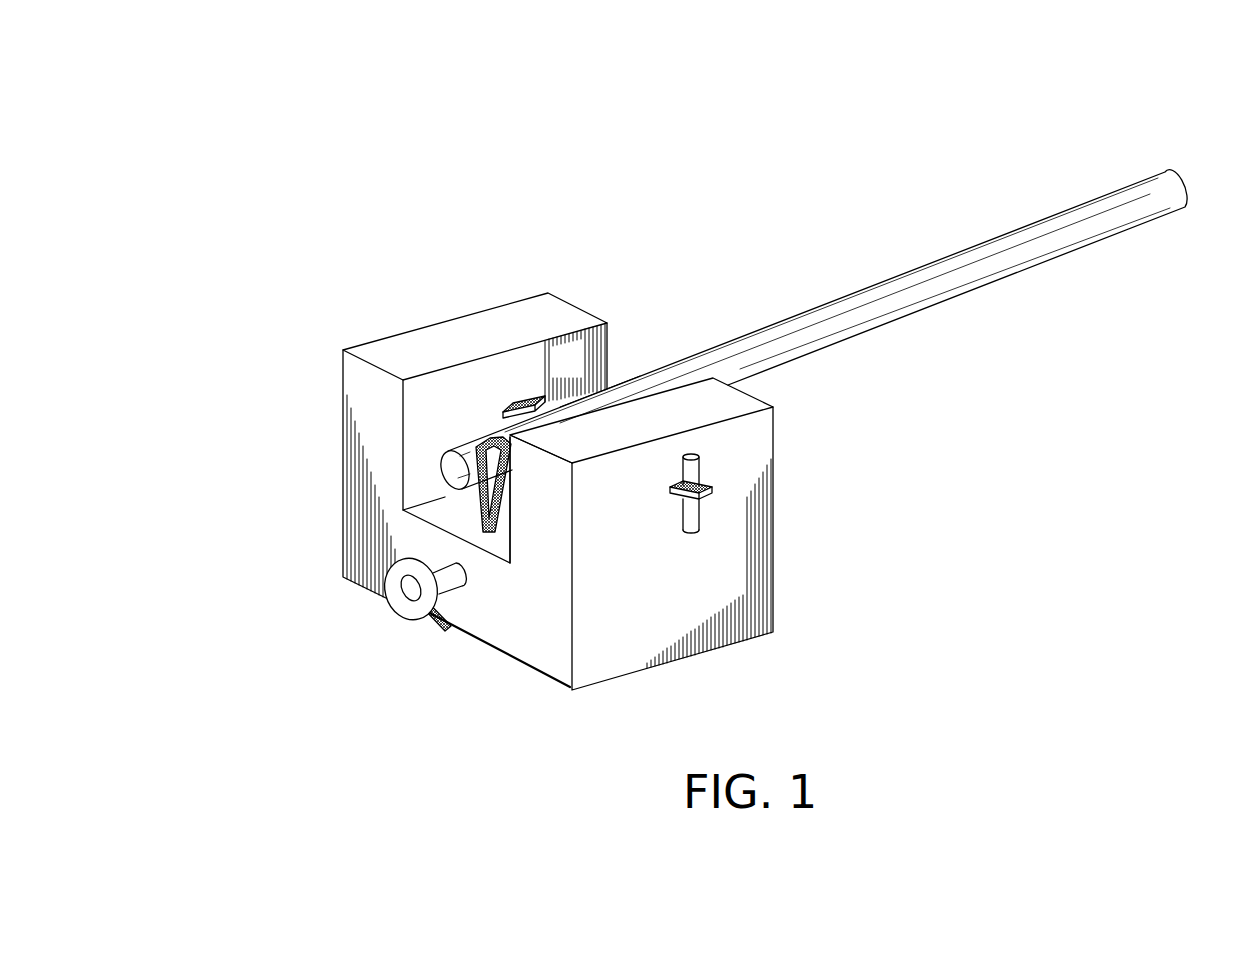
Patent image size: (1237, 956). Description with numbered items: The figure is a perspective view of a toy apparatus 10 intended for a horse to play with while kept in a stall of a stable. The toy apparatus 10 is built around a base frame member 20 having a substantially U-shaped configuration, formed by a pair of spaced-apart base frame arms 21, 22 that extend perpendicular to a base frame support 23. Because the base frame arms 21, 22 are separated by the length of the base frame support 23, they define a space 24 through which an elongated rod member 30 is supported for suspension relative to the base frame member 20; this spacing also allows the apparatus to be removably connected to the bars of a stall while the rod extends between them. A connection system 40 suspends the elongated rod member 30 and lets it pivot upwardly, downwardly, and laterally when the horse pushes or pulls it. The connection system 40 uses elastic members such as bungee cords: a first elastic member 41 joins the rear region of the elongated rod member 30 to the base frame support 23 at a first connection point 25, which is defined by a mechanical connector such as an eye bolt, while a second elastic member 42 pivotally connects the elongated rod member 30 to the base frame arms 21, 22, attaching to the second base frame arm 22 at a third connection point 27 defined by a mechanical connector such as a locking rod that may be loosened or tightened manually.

The toy apparatus 10 is at (344, 170).
The base frame member 20 is at (363, 440).
The first base frame arm 21 is at (387, 480).
The second base frame arm 22 is at (747, 550).
The base frame support 23 is at (522, 620).
The space 24 is at (625, 368).
The first connection point 25 is at (392, 600).
The third connection point 27 is at (693, 523).
The elongated rod member 30 is at (1132, 200).
The connection system 40 is at (325, 683).
The first elastic member 41 is at (438, 622).
The second elastic member 42 is at (523, 400).